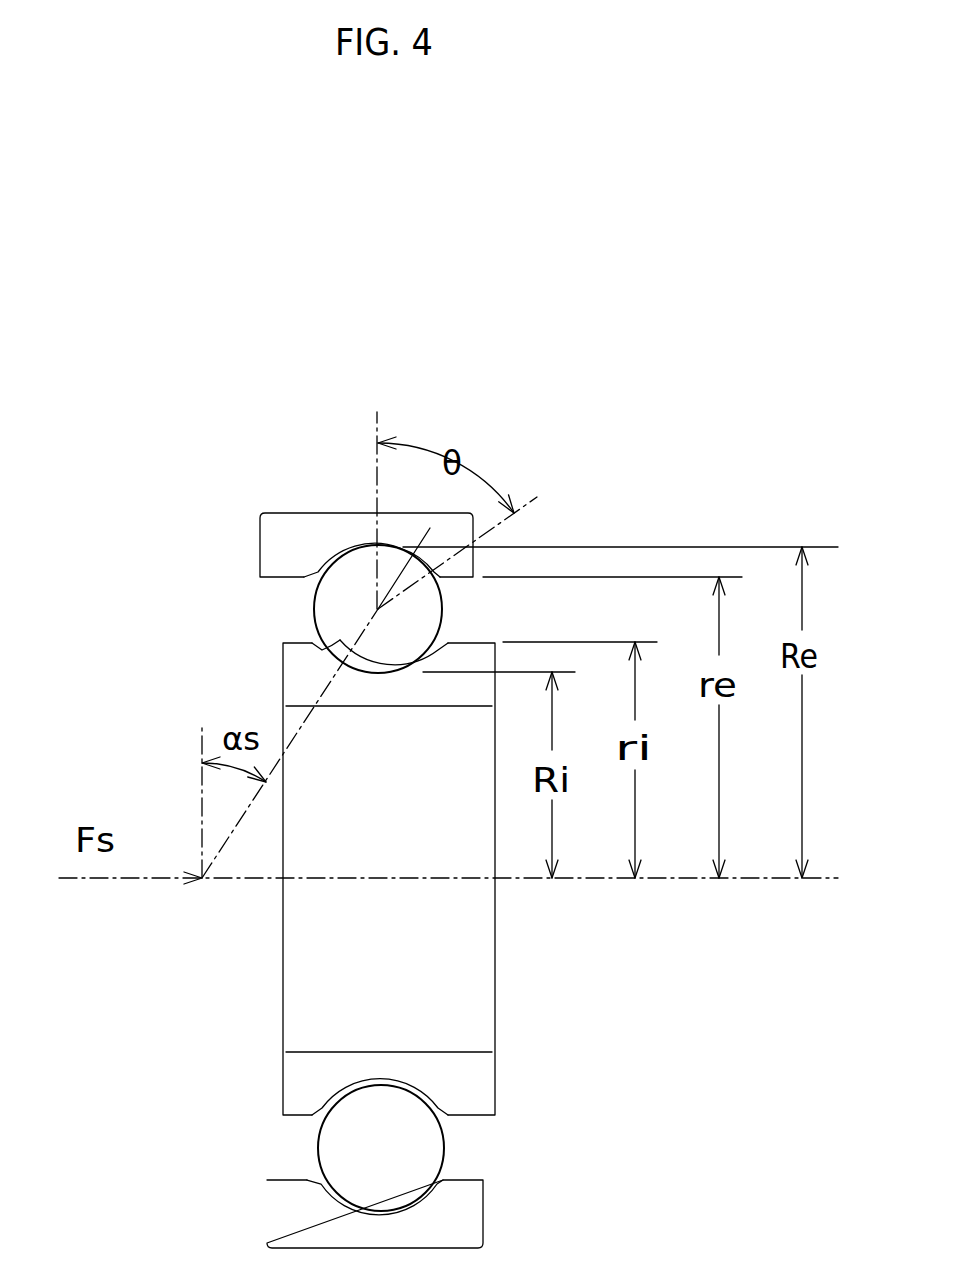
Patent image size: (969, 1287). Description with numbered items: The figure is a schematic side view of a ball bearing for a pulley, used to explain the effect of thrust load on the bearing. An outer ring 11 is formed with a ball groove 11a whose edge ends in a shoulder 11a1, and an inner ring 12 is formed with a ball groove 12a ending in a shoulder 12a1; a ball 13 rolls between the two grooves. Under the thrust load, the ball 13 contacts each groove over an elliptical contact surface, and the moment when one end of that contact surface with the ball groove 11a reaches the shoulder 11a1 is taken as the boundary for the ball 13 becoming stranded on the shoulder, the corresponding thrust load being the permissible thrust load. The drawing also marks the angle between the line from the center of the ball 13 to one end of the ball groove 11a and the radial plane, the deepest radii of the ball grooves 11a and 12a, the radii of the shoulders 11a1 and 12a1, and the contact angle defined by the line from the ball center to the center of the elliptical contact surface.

The outer ring 11 is at (305, 512).
The ball groove 11a is at (363, 548).
The shoulder 11a1 is at (468, 574).
The inner ring 12 is at (338, 706).
The ball groove 12a is at (367, 673).
The shoulder 12a1 is at (307, 642).
The ball 13 is at (320, 595).